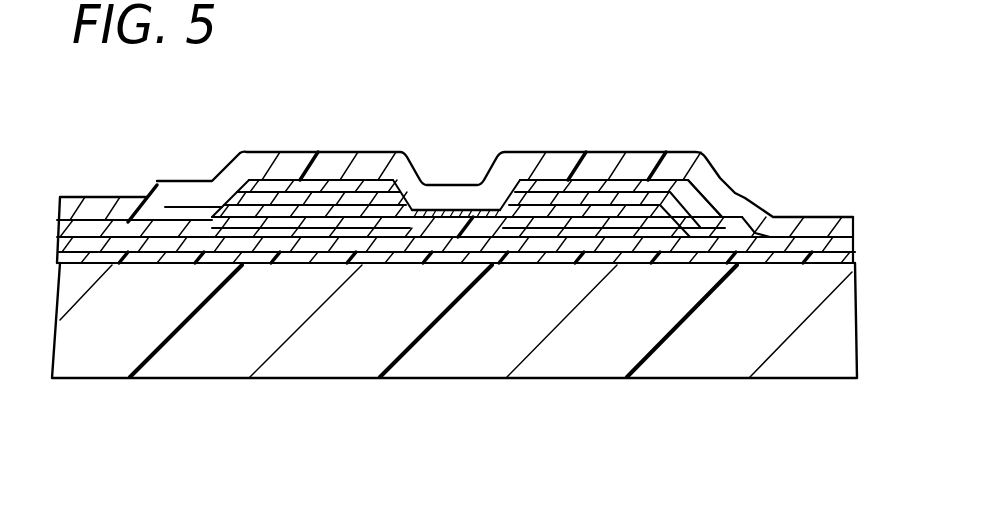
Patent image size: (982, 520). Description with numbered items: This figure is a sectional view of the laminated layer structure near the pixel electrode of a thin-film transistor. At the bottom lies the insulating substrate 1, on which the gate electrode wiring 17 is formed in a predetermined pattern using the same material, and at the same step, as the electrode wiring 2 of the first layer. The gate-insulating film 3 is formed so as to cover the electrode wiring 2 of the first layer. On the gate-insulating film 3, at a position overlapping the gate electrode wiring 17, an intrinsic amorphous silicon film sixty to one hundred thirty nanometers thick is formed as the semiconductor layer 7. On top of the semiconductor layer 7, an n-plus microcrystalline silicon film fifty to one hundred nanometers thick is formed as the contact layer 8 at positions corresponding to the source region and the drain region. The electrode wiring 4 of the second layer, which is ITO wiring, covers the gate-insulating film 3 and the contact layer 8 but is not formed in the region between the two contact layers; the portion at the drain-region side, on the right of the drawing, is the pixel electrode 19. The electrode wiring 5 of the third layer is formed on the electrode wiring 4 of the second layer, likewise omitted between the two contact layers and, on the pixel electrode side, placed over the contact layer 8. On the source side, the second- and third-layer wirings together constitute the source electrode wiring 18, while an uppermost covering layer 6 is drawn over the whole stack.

The insulating substrate 1 is at (813, 340).
The electrode wiring of the first layer 2 is at (456, 293).
The gate electrode wiring 17 is at (361, 265).
The gate-insulating film 3 is at (766, 258).
The electrode wiring of the second layer 4 is at (455, 180).
The pixel electrode 19 is at (620, 196).
The electrode wiring of the third layer 5 is at (392, 172).
The source electrode wiring 18 is at (101, 226).
The protective layer 6 is at (251, 167).
The semiconductor layer 7 is at (443, 216).
The contact layer 8 is at (357, 207).